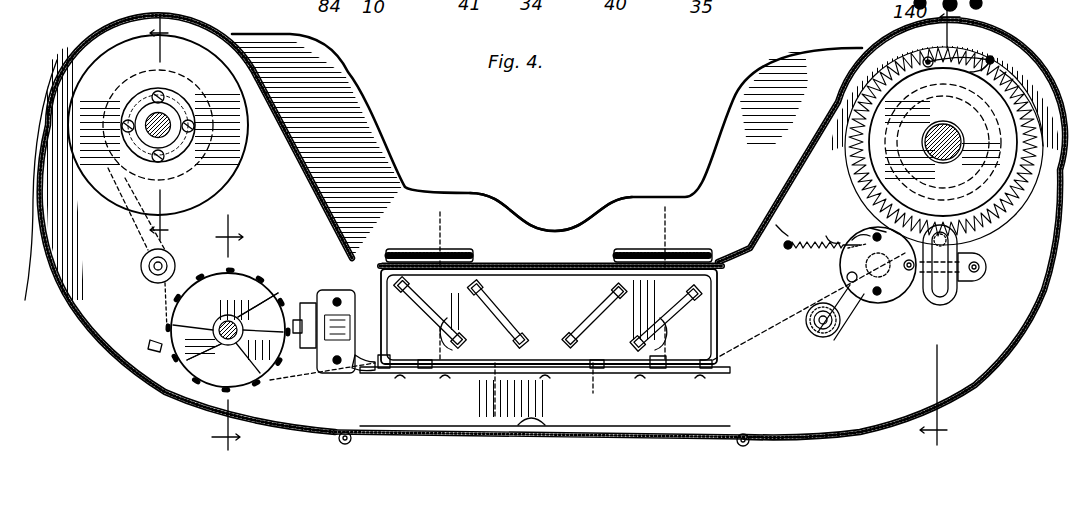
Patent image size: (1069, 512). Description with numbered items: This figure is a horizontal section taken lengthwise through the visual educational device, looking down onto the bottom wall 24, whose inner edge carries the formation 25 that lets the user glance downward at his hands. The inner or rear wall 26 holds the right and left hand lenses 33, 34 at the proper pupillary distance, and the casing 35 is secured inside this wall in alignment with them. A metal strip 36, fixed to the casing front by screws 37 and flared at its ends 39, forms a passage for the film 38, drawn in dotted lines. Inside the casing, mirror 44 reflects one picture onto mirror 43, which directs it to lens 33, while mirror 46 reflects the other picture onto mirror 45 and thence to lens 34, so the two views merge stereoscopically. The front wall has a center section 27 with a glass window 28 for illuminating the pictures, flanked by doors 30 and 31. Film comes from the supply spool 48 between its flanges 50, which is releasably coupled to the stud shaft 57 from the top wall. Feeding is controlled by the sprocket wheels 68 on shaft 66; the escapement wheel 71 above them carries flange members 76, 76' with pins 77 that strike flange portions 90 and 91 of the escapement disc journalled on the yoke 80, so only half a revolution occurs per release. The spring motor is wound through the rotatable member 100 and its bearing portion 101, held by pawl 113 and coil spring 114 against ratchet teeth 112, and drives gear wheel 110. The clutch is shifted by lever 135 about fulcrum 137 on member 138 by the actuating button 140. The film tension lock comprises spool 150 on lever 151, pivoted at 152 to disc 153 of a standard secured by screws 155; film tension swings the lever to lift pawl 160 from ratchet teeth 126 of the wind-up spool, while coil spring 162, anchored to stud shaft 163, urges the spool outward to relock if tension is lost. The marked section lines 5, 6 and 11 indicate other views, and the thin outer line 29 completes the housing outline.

The section line 5 is at (165, 130).
The section line 6 is at (220, 332).
The section line 11 is at (952, 227).
The bottom wall 24 is at (370, 122).
The formation 25 is at (486, 205).
The inner wall 26 is at (530, 254).
The center section 27 is at (625, 433).
The glass window 28 is at (510, 427).
The housing flange 29 is at (80, 250).
The door 30 is at (77, 310).
The door 31 is at (985, 378).
The right hand lens 33 is at (674, 250).
The left hand lens 34 is at (412, 249).
The casing 35 is at (713, 330).
The metal strip 36 is at (603, 374).
The screws 37 is at (693, 374).
The film 38 is at (772, 350).
The flared ends 39 is at (378, 371).
The mirror 43 is at (662, 369).
The mirror 44 is at (588, 311).
The mirror 45 is at (428, 368).
The mirror 46 is at (517, 292).
The supply spool 48 is at (128, 176).
The flanges 50 is at (97, 68).
The stud shaft 57 is at (172, 137).
The shaft 66 is at (247, 377).
The sprocket wheels 68 is at (230, 274).
The escapement wheel 71 is at (200, 368).
The peripheral flange member 76 is at (270, 283).
The peripheral flange member 76' is at (138, 289).
The pin 77 is at (150, 346).
The yoke 80 is at (350, 370).
The peripheral flange portion 90 is at (306, 370).
The peripheral flange portion 91 is at (306, 302).
The rotatable member 100 is at (905, 76).
The bearing portion 101 is at (920, 137).
The gear wheel 110 is at (907, 113).
The ratchet teeth 112 is at (1002, 70).
The pawl 113 is at (925, 60).
The coil spring 114 is at (968, 50).
The ratchet teeth 126 is at (895, 155).
The lever 135 is at (967, 286).
The fulcrum 137 is at (982, 270).
The member 138 is at (987, 259).
The actuating button 140 is at (958, 240).
The spool 150 is at (840, 338).
The lever 151 is at (845, 325).
The pivot 152 is at (835, 278).
The disc 153 is at (913, 293).
The screws 155 is at (887, 302).
The pawl 160 is at (887, 228).
The coil spring 162 is at (827, 237).
The stud shaft 163 is at (785, 226).